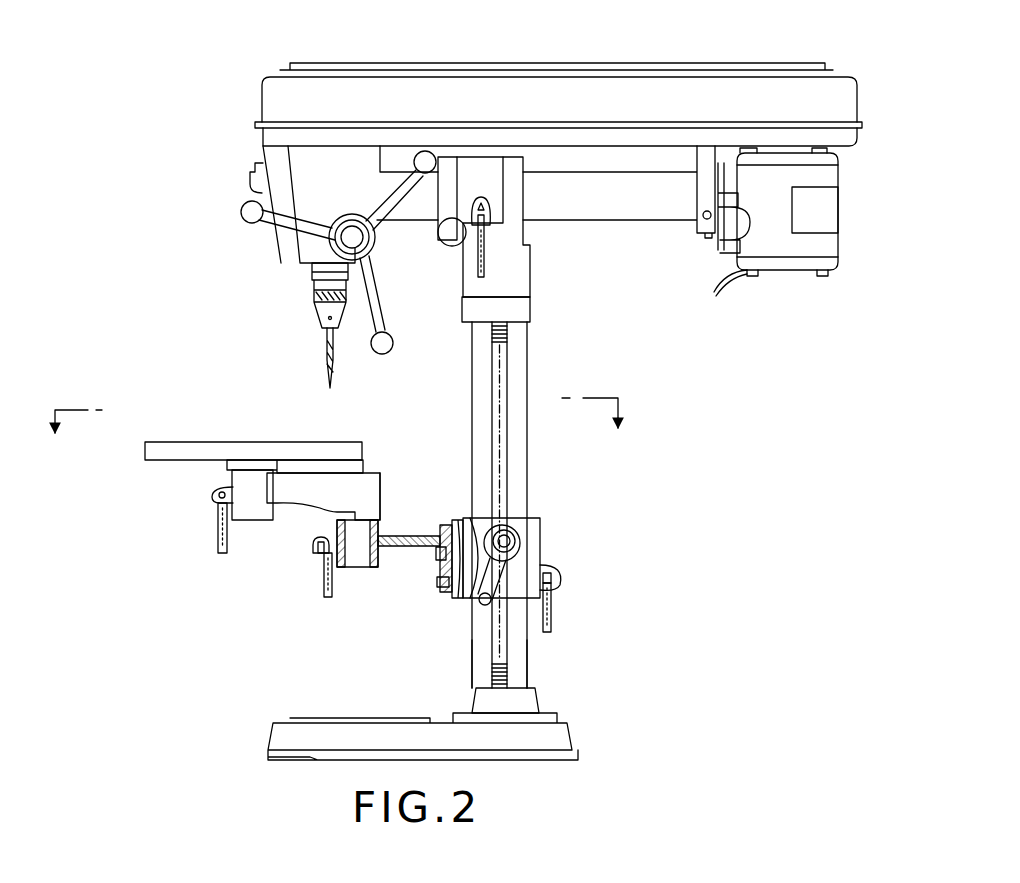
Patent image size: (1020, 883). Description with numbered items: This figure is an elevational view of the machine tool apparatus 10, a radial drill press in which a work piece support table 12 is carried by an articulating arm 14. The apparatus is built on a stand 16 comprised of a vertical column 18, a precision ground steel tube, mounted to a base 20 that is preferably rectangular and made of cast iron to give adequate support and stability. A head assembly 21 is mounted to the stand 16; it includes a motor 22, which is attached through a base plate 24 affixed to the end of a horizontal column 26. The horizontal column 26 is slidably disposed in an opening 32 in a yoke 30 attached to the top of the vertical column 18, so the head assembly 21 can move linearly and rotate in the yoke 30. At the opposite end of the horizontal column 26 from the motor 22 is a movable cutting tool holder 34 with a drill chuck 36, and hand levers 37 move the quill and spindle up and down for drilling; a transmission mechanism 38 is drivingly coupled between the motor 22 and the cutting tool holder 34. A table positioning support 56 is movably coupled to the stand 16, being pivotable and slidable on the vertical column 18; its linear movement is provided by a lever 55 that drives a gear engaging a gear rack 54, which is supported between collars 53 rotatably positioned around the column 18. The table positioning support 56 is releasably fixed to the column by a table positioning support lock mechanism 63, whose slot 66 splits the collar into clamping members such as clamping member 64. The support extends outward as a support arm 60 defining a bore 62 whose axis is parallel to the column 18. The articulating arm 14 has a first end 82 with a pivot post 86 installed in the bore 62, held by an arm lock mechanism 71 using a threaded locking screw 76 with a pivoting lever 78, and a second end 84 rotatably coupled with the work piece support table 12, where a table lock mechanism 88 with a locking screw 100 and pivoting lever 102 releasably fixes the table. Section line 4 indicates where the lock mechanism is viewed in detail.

The machine tool apparatus 10 is at (626, 368).
The work piece support table 12 is at (159, 438).
The articulating arm 14 is at (377, 478).
The stand 16 is at (532, 463).
The vertical column 18 is at (525, 658).
The base 20 is at (551, 738).
The head assembly 21 is at (781, 62).
The motor 22 is at (825, 213).
The base plate 24 is at (707, 197).
The horizontal column 26 is at (624, 205).
The yoke 30 is at (515, 262).
The opening 32 is at (540, 175).
The cutting tool holder 34 is at (304, 291).
The drill chuck 36 is at (318, 317).
The hand levers 37 is at (256, 224).
The transmission mechanism 38 is at (640, 88).
The section line 4- 4 is at (339, 419).
The collars 53 is at (532, 308).
The gear rack 54 is at (500, 382).
The lever 55 is at (480, 600).
The table positioning support 56 is at (545, 533).
The support arm 60 is at (421, 568).
The bore 62 is at (378, 565).
The table positioning support lock mechanism 63 is at (563, 575).
The clamping member 64 is at (562, 582).
The slot 66 is at (555, 628).
The arm lock mechanism 71 is at (310, 562).
The threaded locking screw 76 is at (317, 545).
The pivoting lever 78 is at (321, 586).
The first end 82 is at (381, 500).
The second end 84 is at (250, 508).
The pivot post 86 is at (355, 562).
The table lock mechanism 88 is at (205, 519).
The locking screw 100 is at (216, 493).
The pivoting lever 102 is at (217, 547).